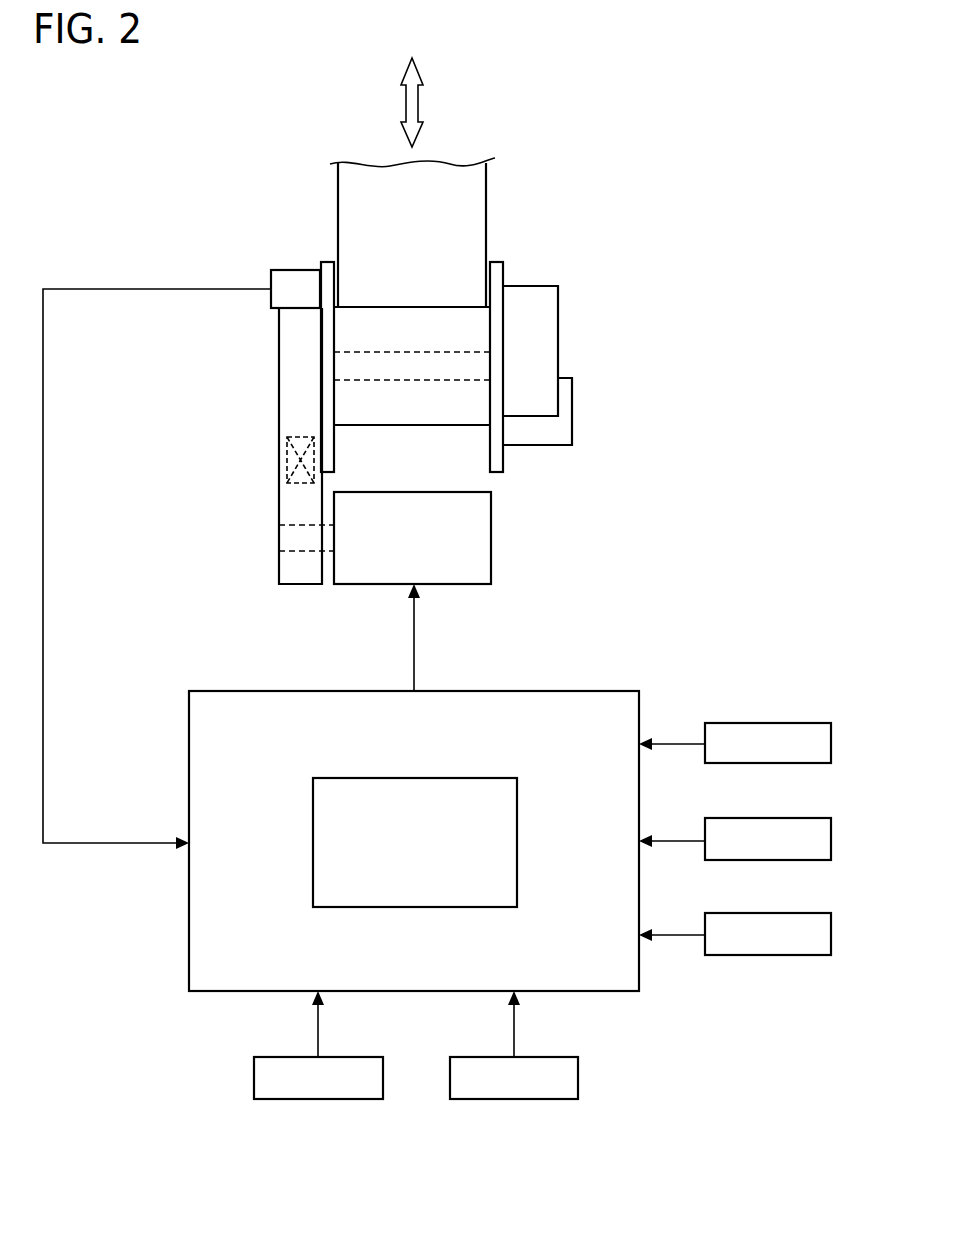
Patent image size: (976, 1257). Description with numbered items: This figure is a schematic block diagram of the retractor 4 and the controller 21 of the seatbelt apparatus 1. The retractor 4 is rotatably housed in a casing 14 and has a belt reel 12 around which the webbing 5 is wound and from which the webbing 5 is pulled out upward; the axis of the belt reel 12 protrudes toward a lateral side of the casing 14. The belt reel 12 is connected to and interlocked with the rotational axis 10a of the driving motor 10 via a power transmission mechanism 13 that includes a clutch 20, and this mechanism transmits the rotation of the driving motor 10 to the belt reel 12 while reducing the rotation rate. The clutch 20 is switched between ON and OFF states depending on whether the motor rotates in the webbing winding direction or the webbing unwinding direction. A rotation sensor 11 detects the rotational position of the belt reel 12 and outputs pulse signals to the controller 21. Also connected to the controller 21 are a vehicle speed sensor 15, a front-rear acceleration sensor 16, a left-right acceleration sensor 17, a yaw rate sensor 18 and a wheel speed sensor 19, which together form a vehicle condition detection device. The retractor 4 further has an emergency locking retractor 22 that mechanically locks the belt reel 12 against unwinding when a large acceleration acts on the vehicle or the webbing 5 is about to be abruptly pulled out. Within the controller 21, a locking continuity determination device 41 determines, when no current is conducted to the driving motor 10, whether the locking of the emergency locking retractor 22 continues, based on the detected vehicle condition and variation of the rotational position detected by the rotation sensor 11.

The seatbelt apparatus 1 is at (536, 200).
The retractor 4 is at (522, 274).
The webbing 5 is at (368, 172).
The driving motor 10 is at (475, 538).
The rotational axis 10a is at (328, 540).
The rotation sensor 11 is at (295, 268).
The belt reel 12 is at (460, 380).
The power transmission mechanism 13 is at (279, 375).
The casing 14 is at (498, 317).
The vehicle speed sensor 15 is at (775, 723).
The front-rear acceleration sensor 16 is at (775, 818).
The left-right acceleration sensor 17 is at (775, 913).
The yaw rate sensor 18 is at (317, 1100).
The wheel speed sensor 19 is at (514, 1100).
The clutch 20 is at (287, 458).
The controller 21 is at (547, 691).
The emergency locking retractor 22 is at (572, 350).
The locking continuity determination device 41 is at (517, 842).